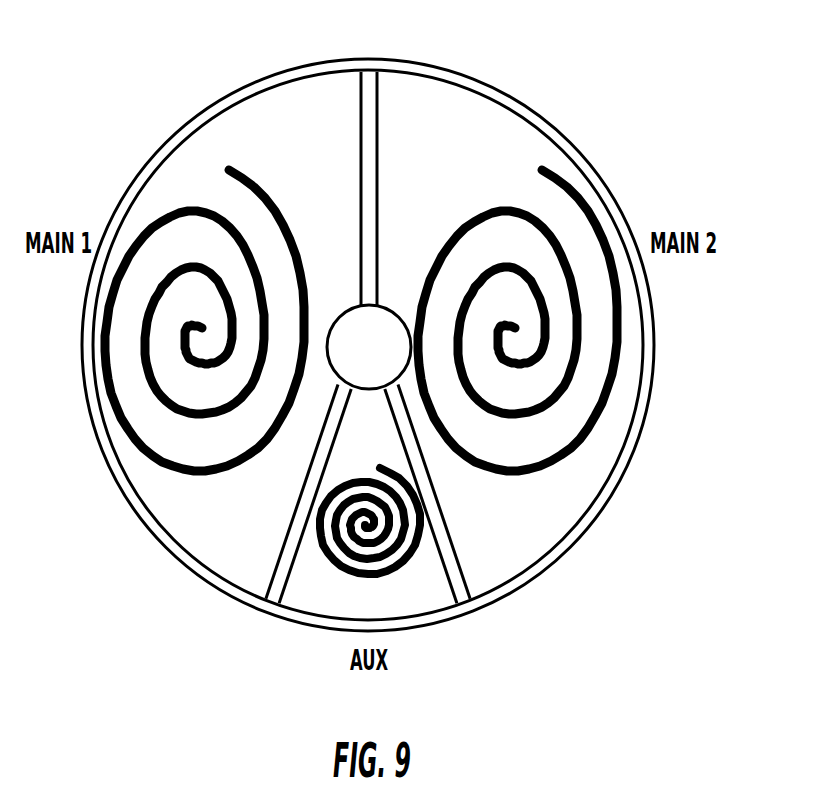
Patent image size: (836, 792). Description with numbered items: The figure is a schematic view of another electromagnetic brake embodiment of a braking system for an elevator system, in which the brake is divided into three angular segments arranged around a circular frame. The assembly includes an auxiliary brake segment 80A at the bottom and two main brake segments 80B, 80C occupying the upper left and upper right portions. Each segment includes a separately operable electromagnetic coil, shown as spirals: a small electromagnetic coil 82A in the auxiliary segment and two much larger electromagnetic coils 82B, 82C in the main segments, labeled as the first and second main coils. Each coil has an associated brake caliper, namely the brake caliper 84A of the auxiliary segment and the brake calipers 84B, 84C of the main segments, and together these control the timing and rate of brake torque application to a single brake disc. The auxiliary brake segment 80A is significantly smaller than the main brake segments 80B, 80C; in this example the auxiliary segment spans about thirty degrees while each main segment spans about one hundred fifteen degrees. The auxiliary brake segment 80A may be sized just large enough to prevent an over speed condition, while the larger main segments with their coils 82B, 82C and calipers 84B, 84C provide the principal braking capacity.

The auxiliary brake segment 80A is at (453, 631).
The main brake segment 80B is at (226, 98).
The main brake segment 80C is at (650, 131).
The electromagnetic coil 82A is at (363, 530).
The electromagnetic coil 82B is at (183, 352).
The electromagnetic coil 82C is at (590, 332).
The brake caliper 84A is at (397, 598).
The brake caliper 84B is at (196, 525).
The brake caliper 84C is at (462, 122).